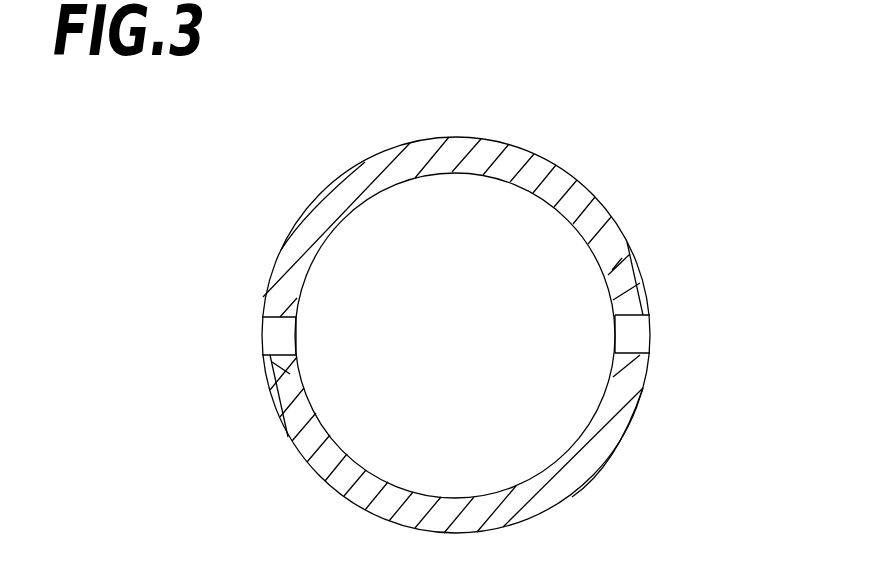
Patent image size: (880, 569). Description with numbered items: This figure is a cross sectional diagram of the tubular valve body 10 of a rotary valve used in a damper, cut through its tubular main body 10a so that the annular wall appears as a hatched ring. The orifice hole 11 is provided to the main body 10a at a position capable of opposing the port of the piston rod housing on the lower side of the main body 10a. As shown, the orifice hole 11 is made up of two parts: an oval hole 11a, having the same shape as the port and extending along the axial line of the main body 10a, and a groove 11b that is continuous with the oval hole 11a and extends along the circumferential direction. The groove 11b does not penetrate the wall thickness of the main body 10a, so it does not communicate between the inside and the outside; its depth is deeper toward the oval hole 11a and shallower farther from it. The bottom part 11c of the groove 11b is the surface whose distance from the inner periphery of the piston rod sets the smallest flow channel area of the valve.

The tubular valve body 10 is at (476, 282).
The tubular main body 10a is at (583, 188).
The orifice hole 11 is at (274, 340).
The oval hole 11a is at (290, 318).
The groove 11b is at (272, 403).
The bottom part 11c is at (293, 373).